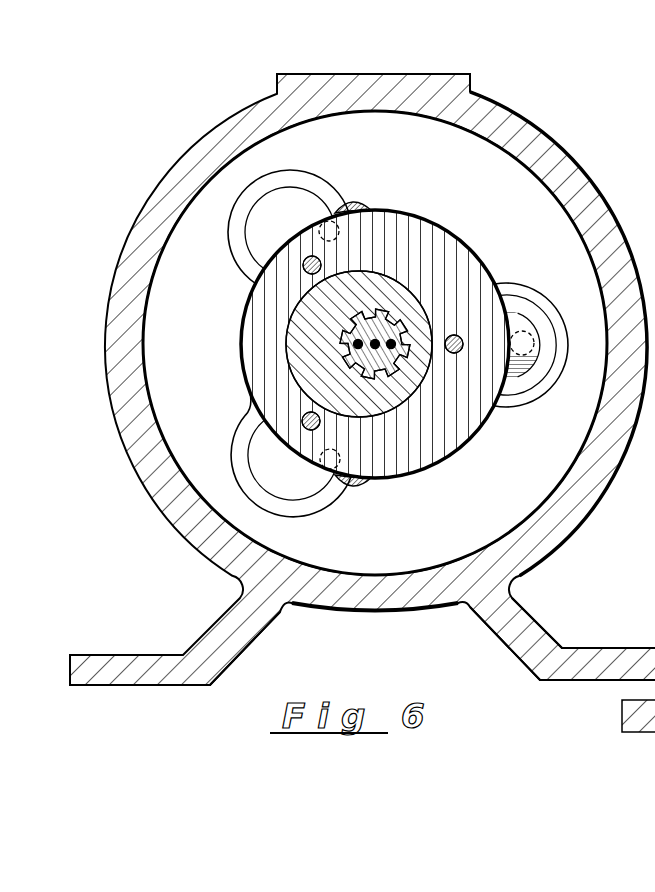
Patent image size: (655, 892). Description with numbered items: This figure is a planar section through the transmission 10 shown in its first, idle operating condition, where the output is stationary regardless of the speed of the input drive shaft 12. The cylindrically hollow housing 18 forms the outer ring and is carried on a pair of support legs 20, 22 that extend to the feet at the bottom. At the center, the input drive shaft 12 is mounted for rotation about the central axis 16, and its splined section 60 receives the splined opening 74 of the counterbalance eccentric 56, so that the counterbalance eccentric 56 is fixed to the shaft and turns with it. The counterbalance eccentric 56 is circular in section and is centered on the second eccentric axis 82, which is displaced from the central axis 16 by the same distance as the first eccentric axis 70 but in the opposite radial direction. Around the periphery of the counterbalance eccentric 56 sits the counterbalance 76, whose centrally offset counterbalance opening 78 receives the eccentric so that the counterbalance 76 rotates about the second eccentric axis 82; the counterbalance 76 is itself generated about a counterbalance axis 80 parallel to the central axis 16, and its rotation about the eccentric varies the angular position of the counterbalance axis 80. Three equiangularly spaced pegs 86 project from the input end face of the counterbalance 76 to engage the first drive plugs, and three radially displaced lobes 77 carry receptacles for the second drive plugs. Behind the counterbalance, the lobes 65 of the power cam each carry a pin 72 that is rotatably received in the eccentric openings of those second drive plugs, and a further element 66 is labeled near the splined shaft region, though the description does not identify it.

The transmission 10 is at (534, 94).
The input drive shaft 12 is at (366, 334).
The central axis 16 is at (402, 319).
The housing 18 is at (535, 146).
The support leg 20 is at (262, 622).
The support leg 22 is at (512, 640).
The counterbalance eccentric 56 is at (425, 470).
The splined section 60 is at (378, 381).
The lobe 65 is at (352, 200).
The spline 66 is at (365, 322).
The first eccentric axis 70 is at (498, 286).
The pin 72 is at (336, 221).
The splined opening 74 is at (416, 391).
The counterbalance 76 is at (397, 223).
The lobe 77 is at (298, 176).
The counterbalance opening 78 is at (350, 296).
The counterbalance axis 80 is at (400, 381).
The second eccentric axis 82 is at (497, 280).
The peg 86 is at (306, 259).